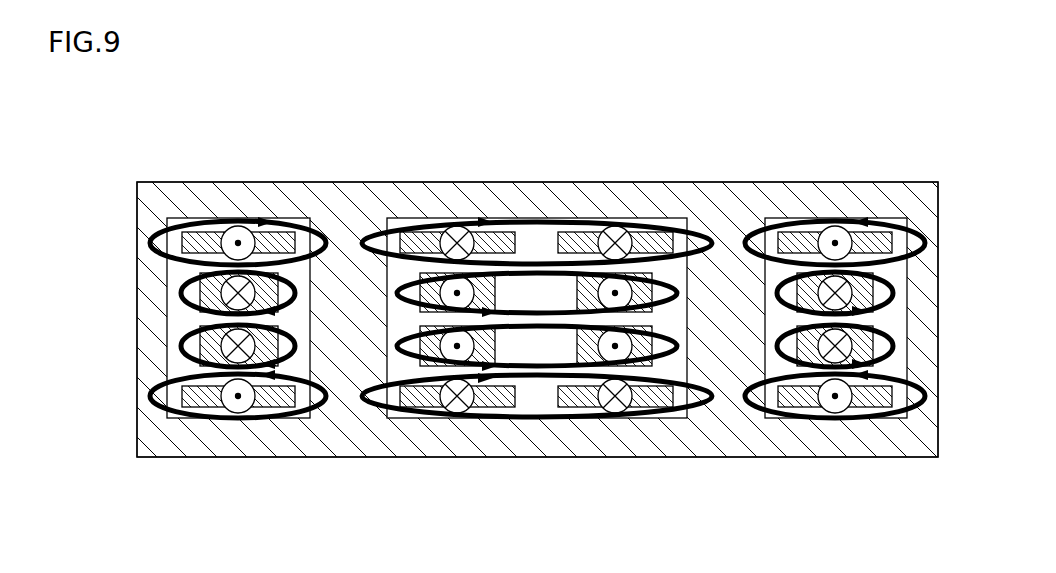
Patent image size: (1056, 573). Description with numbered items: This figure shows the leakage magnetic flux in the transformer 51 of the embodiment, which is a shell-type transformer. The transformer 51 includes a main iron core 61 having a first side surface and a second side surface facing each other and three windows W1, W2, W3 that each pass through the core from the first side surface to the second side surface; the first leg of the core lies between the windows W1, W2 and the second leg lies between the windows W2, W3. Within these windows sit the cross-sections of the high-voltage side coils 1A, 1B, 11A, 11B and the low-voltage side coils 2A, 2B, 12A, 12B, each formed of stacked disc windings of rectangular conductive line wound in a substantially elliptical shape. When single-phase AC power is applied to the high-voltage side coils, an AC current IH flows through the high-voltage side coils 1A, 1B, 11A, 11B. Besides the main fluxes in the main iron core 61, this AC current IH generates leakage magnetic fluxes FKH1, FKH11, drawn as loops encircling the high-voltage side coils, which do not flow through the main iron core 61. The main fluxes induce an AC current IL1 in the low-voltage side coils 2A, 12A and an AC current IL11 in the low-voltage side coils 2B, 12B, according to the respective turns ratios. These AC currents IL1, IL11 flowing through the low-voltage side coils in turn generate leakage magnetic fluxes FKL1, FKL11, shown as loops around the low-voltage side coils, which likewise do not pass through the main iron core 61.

The transformer 51 is at (907, 92).
The main iron core 61 is at (917, 228).
The AC current IH is at (172, 230).
The high-voltage side coil 1A is at (207, 234).
The low-voltage side coil 2A is at (285, 234).
The high-voltage side coil 1B is at (640, 234).
The low-voltage side coil 2B is at (583, 234).
The high-voltage side coil 11A is at (205, 408).
The low-voltage side coil 12A is at (270, 408).
The high-voltage side coil 11B is at (656, 410).
The low-voltage side coil 12B is at (574, 412).
The AC current IL1 is at (239, 227).
The AC current IL11 is at (836, 227).
The window W1 is at (308, 412).
The window W2 is at (522, 412).
The window W3 is at (910, 410).
The leakage magnetic flux FKL1 is at (150, 243).
The leakage magnetic flux FKL11 is at (926, 243).
The leakage magnetic flux FKH1 is at (180, 293).
The leakage magnetic flux FKH11 is at (894, 293).